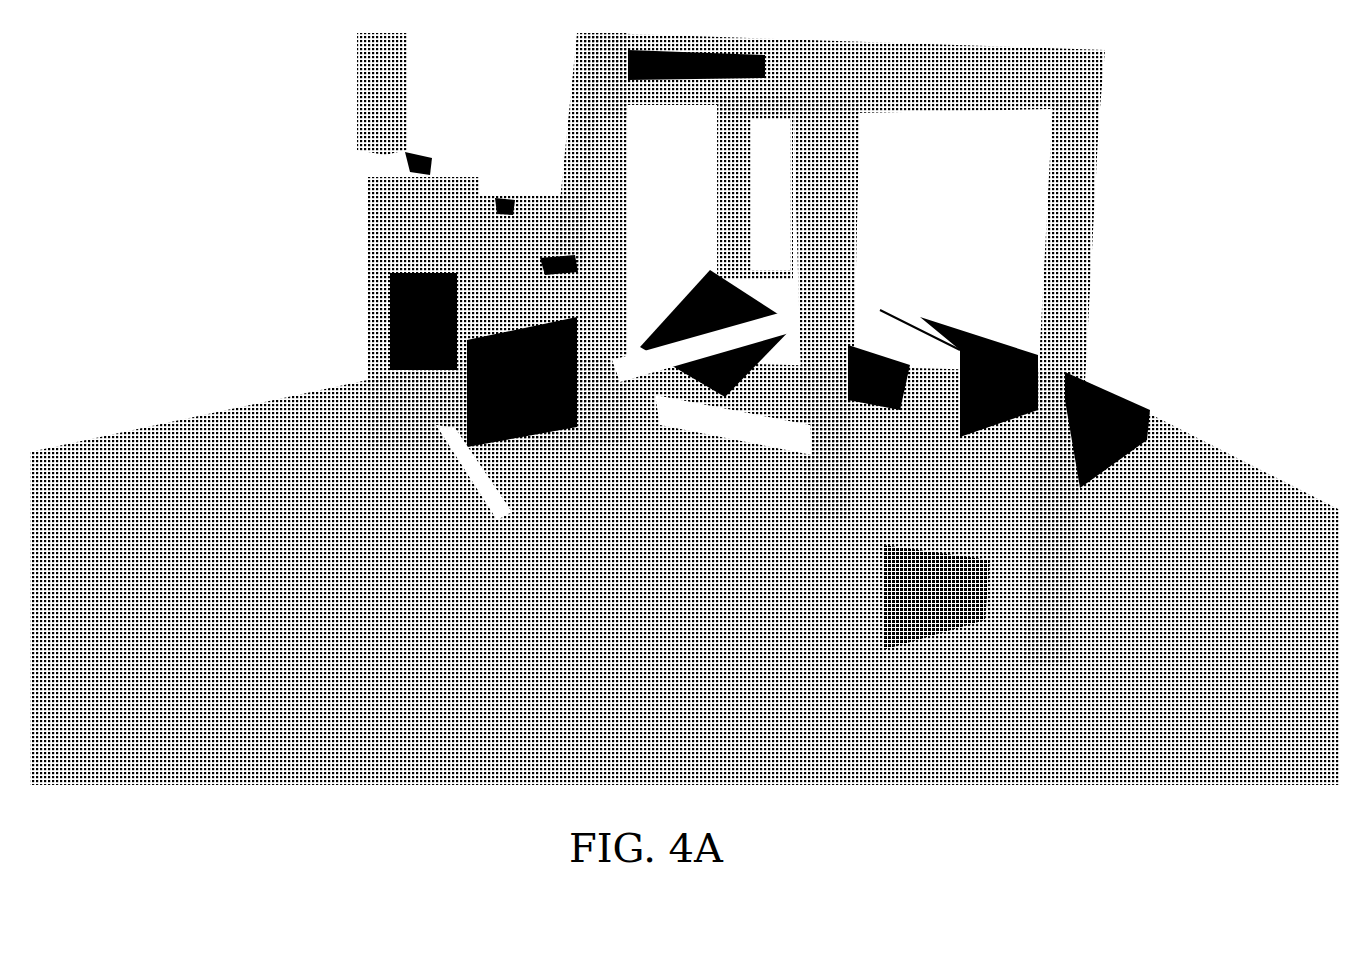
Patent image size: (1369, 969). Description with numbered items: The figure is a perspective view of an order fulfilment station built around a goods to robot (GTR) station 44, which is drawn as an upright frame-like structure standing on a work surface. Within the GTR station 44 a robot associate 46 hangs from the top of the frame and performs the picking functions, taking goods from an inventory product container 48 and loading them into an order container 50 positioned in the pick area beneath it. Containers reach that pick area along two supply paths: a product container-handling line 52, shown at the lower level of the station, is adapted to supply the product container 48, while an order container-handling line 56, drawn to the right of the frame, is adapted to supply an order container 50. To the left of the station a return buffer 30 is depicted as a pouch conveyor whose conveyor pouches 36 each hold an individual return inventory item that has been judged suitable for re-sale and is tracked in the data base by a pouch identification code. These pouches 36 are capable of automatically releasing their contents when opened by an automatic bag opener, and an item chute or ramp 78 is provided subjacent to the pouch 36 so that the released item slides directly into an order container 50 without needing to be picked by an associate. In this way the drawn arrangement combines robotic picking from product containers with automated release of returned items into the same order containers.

The return buffer 30 is at (378, 96).
The conveyor pouch 36 is at (487, 263).
The goods to robot (GTR) station 44 is at (1237, 145).
The robot associate 46 is at (720, 227).
The inventory product container 48 is at (790, 433).
The order container 50 is at (693, 357).
The product container-handling line 52 is at (928, 603).
The order container-handling line 56 is at (1147, 440).
The item chute or ramp 78 is at (472, 480).